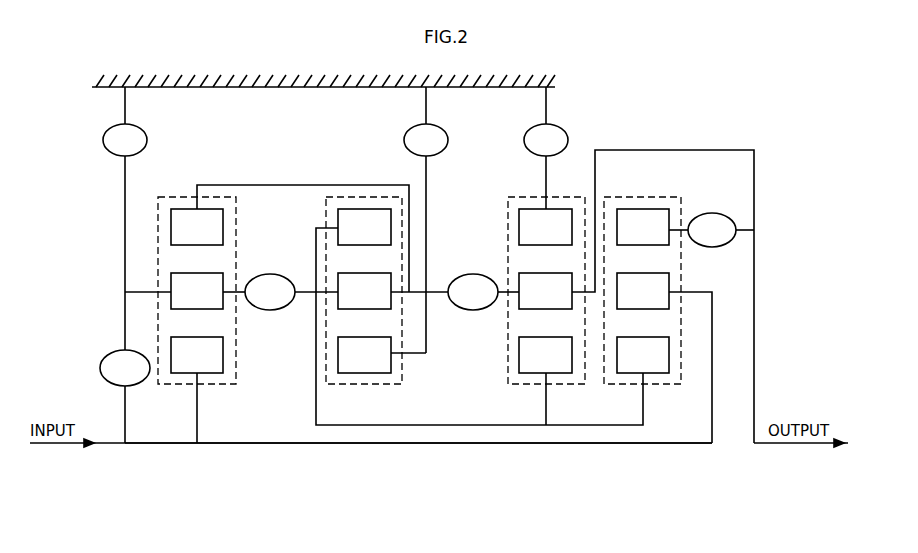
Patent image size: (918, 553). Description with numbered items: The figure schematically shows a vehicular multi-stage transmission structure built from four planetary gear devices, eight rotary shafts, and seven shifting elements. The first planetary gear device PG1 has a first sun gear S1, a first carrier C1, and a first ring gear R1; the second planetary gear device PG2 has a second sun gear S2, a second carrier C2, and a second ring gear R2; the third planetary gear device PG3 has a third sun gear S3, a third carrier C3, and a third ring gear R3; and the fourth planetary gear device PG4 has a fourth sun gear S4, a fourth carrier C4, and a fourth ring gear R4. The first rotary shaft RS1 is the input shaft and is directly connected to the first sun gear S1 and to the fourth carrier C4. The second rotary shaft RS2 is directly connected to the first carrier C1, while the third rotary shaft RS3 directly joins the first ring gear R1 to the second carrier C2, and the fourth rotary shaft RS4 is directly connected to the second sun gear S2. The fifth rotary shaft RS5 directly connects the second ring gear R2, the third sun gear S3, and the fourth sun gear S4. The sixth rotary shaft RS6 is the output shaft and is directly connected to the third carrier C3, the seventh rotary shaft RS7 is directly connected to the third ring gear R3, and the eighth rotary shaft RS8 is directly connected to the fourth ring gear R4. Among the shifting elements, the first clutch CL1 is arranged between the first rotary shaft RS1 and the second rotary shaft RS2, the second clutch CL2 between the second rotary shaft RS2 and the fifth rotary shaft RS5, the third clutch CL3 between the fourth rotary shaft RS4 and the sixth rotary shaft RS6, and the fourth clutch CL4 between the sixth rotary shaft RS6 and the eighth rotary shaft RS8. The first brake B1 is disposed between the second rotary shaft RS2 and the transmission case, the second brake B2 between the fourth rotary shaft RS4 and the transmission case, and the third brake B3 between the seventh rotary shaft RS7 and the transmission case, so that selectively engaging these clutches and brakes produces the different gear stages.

The first rotary shaft RS1 is at (228, 445).
The second rotary shaft RS2 is at (142, 292).
The third rotary shaft RS3 is at (262, 184).
The fourth rotary shaft RS4 is at (427, 330).
The fifth rotary shaft RS5 is at (316, 384).
The sixth rotary shaft RS6 is at (620, 150).
The seventh rotary shaft RS7 is at (548, 180).
The eighth rotary shaft RS8 is at (679, 227).
The first planetary gear device PG1 is at (197, 263).
The second planetary gear device PG2 is at (400, 299).
The third planetary gear device PG3 is at (532, 263).
The fourth planetary gear device PG4 is at (672, 273).
The first ring gear R1 is at (197, 227).
The first carrier C1 is at (197, 291).
The first sun gear S1 is at (197, 355).
The second ring gear R2 is at (364, 227).
The second carrier C2 is at (364, 291).
The second sun gear S2 is at (364, 355).
The third ring gear R3 is at (545, 227).
The third carrier C3 is at (545, 291).
The third sun gear S3 is at (545, 355).
The fourth ring gear R4 is at (643, 227).
The fourth carrier C4 is at (643, 291).
The fourth sun gear S4 is at (643, 355).
The first brake B1 is at (125, 140).
The second brake B2 is at (426, 140).
The third brake B3 is at (546, 140).
The first clutch CL1 is at (125, 368).
The second clutch CL2 is at (270, 292).
The third clutch CL3 is at (473, 292).
The fourth clutch CL4 is at (712, 230).